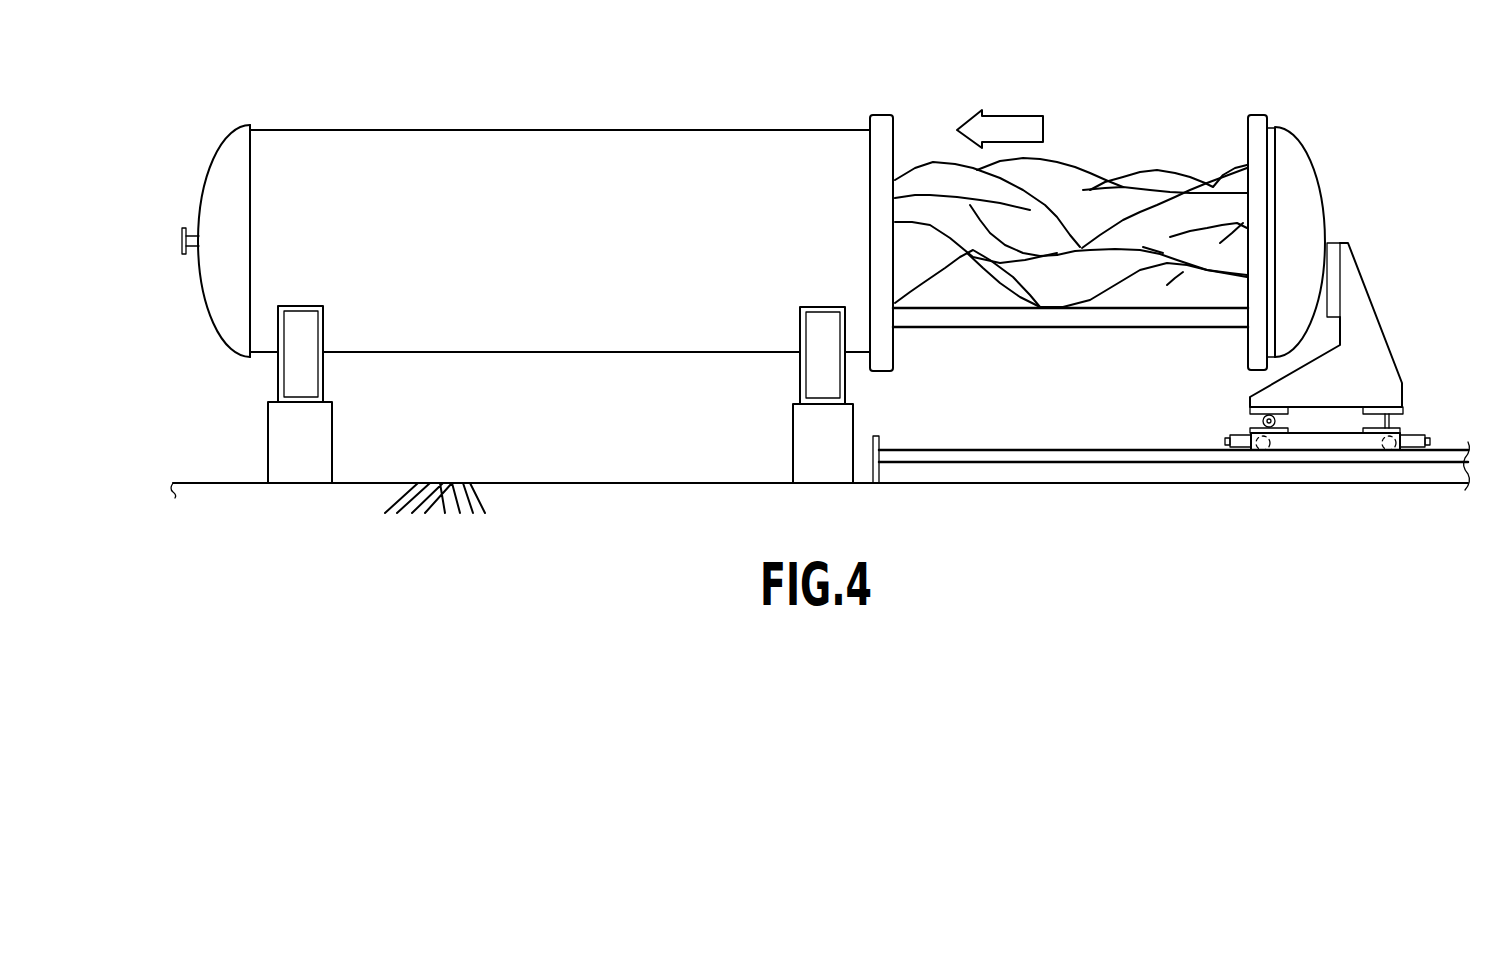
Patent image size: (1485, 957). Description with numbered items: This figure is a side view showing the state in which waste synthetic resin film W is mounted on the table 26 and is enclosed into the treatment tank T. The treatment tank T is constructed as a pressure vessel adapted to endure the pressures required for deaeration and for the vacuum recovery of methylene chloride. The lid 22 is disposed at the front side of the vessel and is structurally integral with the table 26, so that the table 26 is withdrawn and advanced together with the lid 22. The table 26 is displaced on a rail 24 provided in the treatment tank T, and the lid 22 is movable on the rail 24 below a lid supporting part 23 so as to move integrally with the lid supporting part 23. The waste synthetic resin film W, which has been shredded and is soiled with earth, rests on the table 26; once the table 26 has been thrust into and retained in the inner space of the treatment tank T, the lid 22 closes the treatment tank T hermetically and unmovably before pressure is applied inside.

The treatment tank T is at (742, 142).
The waste synthetic resin film W is at (1148, 170).
The lid 22 is at (1289, 147).
The lid supporting part 23 is at (1373, 357).
The rail 24 is at (1437, 455).
The table 26 is at (1183, 315).